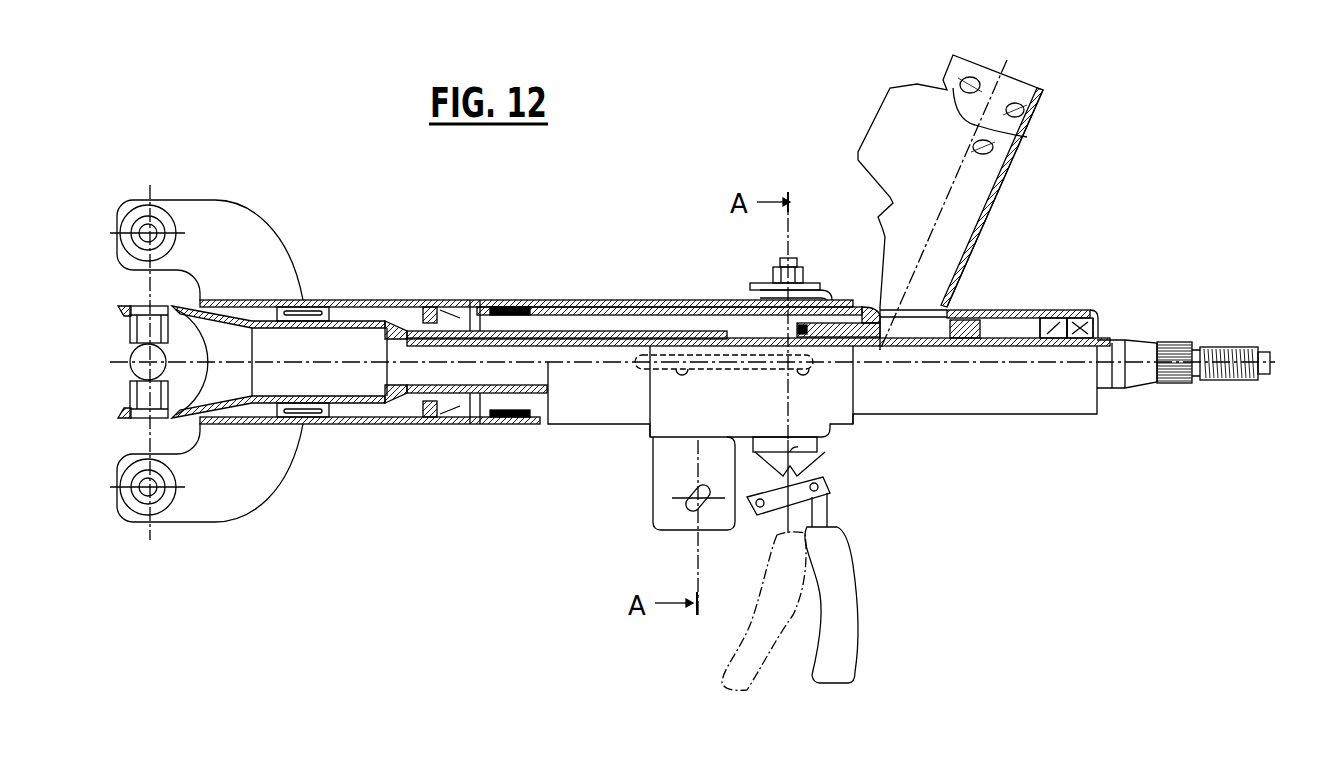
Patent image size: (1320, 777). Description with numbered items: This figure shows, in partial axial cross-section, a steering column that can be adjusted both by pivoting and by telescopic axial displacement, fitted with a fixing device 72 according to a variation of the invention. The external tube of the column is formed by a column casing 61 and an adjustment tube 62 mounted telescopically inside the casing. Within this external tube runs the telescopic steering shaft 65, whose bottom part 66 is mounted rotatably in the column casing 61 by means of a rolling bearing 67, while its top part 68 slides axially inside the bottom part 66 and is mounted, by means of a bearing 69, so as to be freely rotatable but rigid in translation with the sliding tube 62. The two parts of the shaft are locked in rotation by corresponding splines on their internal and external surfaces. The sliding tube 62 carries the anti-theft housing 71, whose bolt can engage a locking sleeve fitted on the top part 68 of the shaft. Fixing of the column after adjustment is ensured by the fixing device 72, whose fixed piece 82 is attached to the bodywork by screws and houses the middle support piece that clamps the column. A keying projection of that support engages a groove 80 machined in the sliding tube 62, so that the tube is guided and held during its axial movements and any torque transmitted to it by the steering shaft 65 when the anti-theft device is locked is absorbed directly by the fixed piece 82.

The column casing 61 is at (375, 300).
The adjustment tube 62 is at (1000, 310).
The steering shaft 65 is at (455, 400).
The bottom part 66 is at (372, 398).
The rolling bearing 67 is at (316, 420).
The top part 68 is at (1058, 318).
The bearing 69 is at (1093, 318).
The anti-theft housing 71 is at (1000, 192).
The fixing device 72 is at (710, 540).
The groove 80 is at (778, 368).
The fixed piece 82 is at (655, 511).